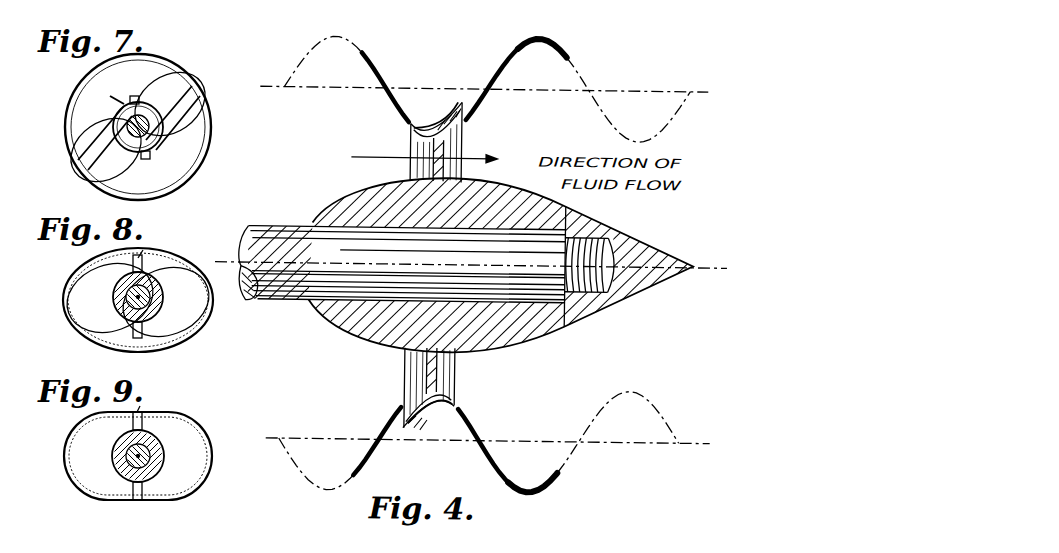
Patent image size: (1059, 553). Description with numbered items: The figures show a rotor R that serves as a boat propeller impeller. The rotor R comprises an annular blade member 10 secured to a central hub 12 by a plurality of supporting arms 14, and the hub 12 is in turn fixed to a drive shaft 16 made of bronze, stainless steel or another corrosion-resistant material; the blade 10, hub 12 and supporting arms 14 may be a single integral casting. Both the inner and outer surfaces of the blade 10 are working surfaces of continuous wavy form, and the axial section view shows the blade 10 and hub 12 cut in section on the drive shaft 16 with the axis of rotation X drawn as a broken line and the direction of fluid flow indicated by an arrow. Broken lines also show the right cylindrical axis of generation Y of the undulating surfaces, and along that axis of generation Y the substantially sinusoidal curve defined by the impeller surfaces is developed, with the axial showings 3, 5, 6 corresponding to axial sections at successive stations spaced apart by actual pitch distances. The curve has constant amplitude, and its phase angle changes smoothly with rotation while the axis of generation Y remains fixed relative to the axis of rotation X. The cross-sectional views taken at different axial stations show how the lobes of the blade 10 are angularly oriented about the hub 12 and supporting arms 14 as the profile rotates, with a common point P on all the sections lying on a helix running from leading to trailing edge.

In FIG. 4, the axial showing 3 is at (505, 80).
In FIG. 4, the axial showing 5 is at (384, 66).
In FIG. 4, the axial showing 6 is at (558, 50).
In FIG. 4, the annular blade member 10 is at (410, 392).
In FIG. 7, the annular blade member 10 is at (197, 153).
In FIG. 8, the annular blade member 10 is at (193, 335).
In FIG. 9, the annular blade member 10 is at (208, 484).
In FIG. 7, the central hub 12 is at (121, 140).
In FIG. 8, the central hub 12 is at (157, 294).
In FIG. 9, the central hub 12 is at (113, 458).
In FIG. 4, the supporting arms 14 is at (415, 165).
In FIG. 7, the supporting arms 14 is at (140, 97).
In FIG. 8, the supporting arms 14 is at (142, 270).
In FIG. 9, the supporting arms 14 is at (132, 428).
In FIG. 4, the drive shaft 16 is at (281, 240).
In FIG. 8, the drive shaft 16 is at (160, 306).
In FIG. 9, the drive shaft 16 is at (161, 458).
In FIG. 4, the rotor R is at (351, 341).
In FIG. 7, the rotor R is at (65, 154).
In FIG. 8, the rotor R is at (70, 336).
In FIG. 9, the rotor R is at (74, 490).
In FIG. 4, the axis of rotation X is at (700, 268).
In FIG. 7, the axis of rotation X is at (124, 127).
In FIG. 8, the axis of rotation X is at (122, 298).
In FIG. 9, the axis of rotation X is at (120, 470).
In FIG. 4, the axis of generation Y is at (637, 88).
In FIG. 7, the common point P is at (112, 97).
In FIG. 8, the common point P is at (143, 247).
In FIG. 9, the common point P is at (142, 414).